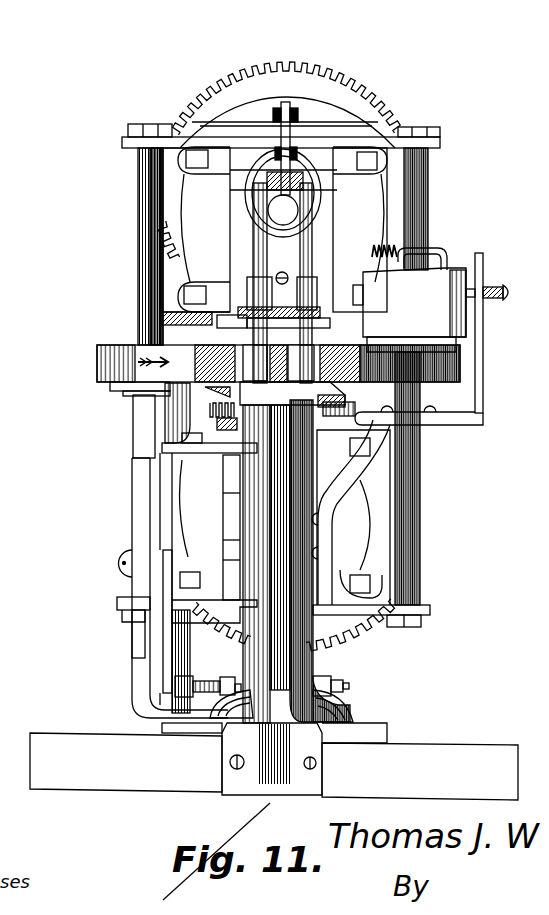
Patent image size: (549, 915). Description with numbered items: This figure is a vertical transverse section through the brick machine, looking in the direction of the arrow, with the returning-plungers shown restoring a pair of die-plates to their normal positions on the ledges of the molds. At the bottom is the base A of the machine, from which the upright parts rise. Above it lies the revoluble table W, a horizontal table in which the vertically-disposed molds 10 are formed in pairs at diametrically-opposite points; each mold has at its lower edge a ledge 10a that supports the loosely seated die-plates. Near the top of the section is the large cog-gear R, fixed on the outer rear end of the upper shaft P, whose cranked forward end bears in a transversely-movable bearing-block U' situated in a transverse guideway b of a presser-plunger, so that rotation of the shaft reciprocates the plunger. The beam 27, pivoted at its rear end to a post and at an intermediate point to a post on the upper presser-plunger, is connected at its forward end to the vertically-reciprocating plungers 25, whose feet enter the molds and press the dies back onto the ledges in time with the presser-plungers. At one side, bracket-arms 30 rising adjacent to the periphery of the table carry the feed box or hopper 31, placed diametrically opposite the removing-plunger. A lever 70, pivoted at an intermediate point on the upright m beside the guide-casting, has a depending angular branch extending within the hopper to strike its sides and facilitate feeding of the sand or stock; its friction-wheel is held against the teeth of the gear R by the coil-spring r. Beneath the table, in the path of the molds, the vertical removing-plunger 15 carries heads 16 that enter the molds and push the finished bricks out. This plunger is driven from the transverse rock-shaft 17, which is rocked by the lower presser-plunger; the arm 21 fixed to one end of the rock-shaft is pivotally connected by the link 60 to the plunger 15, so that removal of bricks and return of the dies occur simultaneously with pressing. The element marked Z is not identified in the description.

The large cog-gear R is at (280, 148).
The beam 27 is at (289, 110).
The bearing-block U' is at (361, 133).
The upright m is at (427, 376).
The vertically-reciprocating plunger 25 is at (260, 232).
The shaft P is at (283, 193).
The transverse guideway b is at (258, 235).
The coil-spring r is at (372, 252).
The lever 70 is at (447, 258).
The feed box or hopper 31 is at (409, 310).
The bracket-arm 30 is at (478, 323).
The revoluble table W is at (97, 360).
The head 16 is at (110, 390).
The hatched block Z is at (175, 413).
The mold 10 is at (291, 351).
The ledge 10a is at (275, 406).
The vertical plunger 15 is at (140, 438).
The link 60 is at (168, 634).
The arm 21 is at (174, 685).
The transverse rock-shaft 17 is at (336, 684).
The base A is at (274, 761).